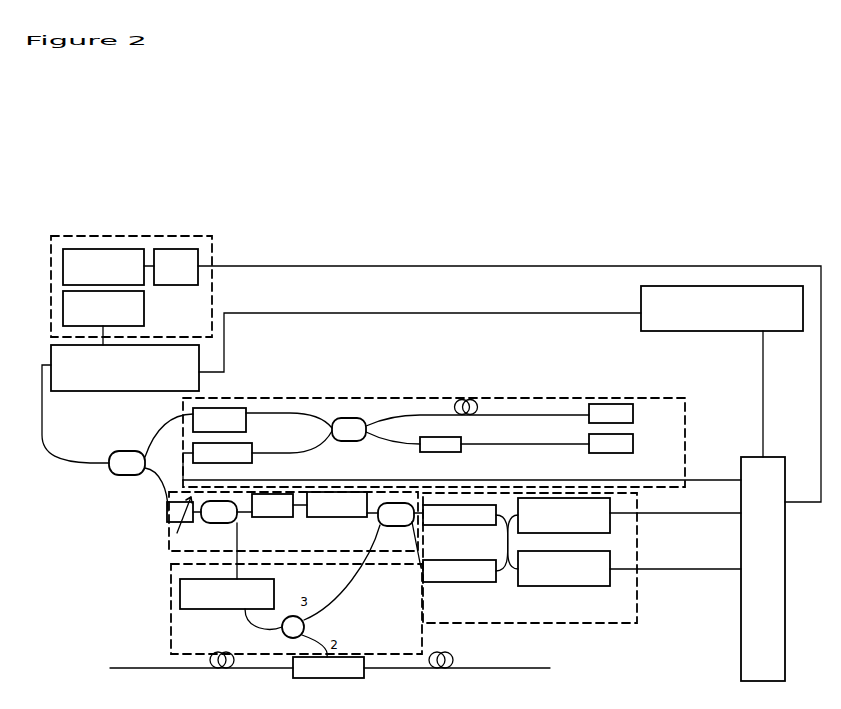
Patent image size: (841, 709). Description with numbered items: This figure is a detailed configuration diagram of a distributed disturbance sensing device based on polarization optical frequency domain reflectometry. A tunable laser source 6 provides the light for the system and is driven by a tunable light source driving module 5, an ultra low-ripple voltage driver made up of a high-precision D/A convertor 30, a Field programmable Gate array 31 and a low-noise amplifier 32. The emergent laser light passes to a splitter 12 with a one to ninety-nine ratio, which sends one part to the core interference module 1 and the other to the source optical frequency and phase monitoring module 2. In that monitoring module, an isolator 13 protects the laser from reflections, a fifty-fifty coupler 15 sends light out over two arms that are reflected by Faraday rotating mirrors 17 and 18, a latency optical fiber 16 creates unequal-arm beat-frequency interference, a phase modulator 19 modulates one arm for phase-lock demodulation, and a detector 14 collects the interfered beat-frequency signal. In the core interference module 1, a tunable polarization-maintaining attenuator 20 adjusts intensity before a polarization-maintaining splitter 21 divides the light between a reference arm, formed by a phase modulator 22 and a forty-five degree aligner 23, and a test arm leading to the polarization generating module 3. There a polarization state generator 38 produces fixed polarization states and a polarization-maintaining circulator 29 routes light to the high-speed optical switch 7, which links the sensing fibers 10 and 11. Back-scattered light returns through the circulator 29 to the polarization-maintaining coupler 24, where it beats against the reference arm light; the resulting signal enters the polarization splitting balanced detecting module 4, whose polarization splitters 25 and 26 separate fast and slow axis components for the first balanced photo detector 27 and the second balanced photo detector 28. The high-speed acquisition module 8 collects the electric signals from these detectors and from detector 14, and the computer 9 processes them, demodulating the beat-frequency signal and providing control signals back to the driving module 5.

The core interference module 1 is at (160, 519).
The source optical frequency and phase monitoring module 2 is at (363, 399).
The polarization generating module 3 is at (171, 596).
The polarization splitting balanced detecting module 4 is at (613, 623).
The tunable light source driving module 5 is at (126, 229).
The tunable laser source 6 is at (125, 368).
The high-speed optical switch 7 is at (328, 667).
The high-speed acquisition module 8 is at (763, 569).
The computer 9 is at (722, 308).
The sensing fiber 10 is at (231, 659).
The sensing fiber 11 is at (451, 659).
The splitter 12 is at (127, 463).
The isolator 13 is at (219, 420).
The detector 14 is at (222, 453).
The coupler 15 is at (349, 429).
The latency optical fiber 16 is at (479, 408).
The Faraday rotating mirror 17 is at (611, 413).
The Faraday rotating mirror 18 is at (611, 443).
The phase modulator 19 is at (449, 438).
The tunable polarization-maintaining attenuator 20 is at (180, 515).
The polarization-maintaining splitter 21 is at (219, 512).
The phase modulator 22 is at (272, 505).
The 45-degree aligner 23 is at (337, 504).
The polarization-maintaining coupler 24 is at (396, 514).
The polarization splitter 25 is at (459, 515).
The polarization splitter 26 is at (459, 571).
The first balanced photo detector 27 is at (564, 515).
The second balanced photo detector 28 is at (564, 568).
The polarization-maintaining circulator 29 is at (293, 627).
The high-precision D/A convertor 30 is at (103, 267).
The Field programmable Gate array 31 is at (176, 267).
The amplifier 32 is at (103, 308).
The polarization state generator 38 is at (227, 594).